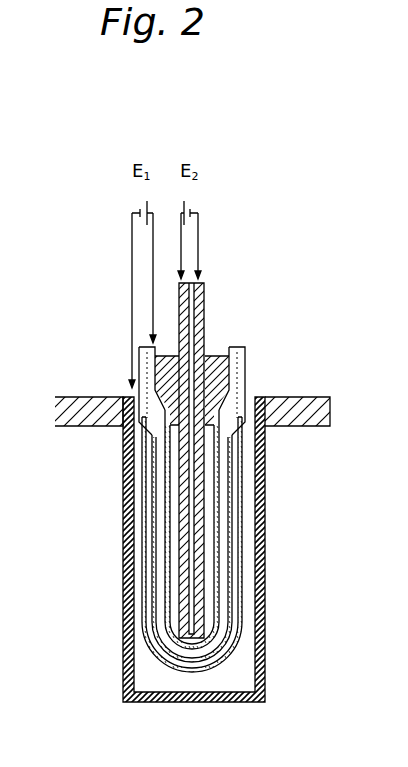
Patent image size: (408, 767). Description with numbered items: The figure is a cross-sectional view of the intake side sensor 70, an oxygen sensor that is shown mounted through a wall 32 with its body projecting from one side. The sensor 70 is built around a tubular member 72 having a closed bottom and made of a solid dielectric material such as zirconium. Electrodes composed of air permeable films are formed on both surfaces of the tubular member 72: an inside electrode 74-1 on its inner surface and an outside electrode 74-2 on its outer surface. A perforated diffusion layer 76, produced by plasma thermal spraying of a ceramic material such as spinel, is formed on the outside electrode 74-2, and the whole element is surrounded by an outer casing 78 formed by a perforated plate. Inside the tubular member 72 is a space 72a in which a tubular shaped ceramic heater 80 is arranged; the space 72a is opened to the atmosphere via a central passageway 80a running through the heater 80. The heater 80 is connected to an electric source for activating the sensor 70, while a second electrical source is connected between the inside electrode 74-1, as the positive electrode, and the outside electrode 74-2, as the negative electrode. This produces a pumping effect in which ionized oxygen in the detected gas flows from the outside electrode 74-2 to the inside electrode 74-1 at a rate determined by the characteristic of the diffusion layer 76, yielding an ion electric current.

The wall 32 is at (323, 396).
The intake side sensor 70 is at (264, 328).
The tubular member 72 is at (245, 388).
The space 72a is at (171, 546).
The inside electrode 74-1 is at (255, 440).
The outside electrode 74-2 is at (240, 472).
The perforated diffusion layer 76 is at (243, 517).
The outer casing 78 is at (262, 548).
The ceramic heater 80 is at (205, 580).
The central passageway 80a is at (192, 610).